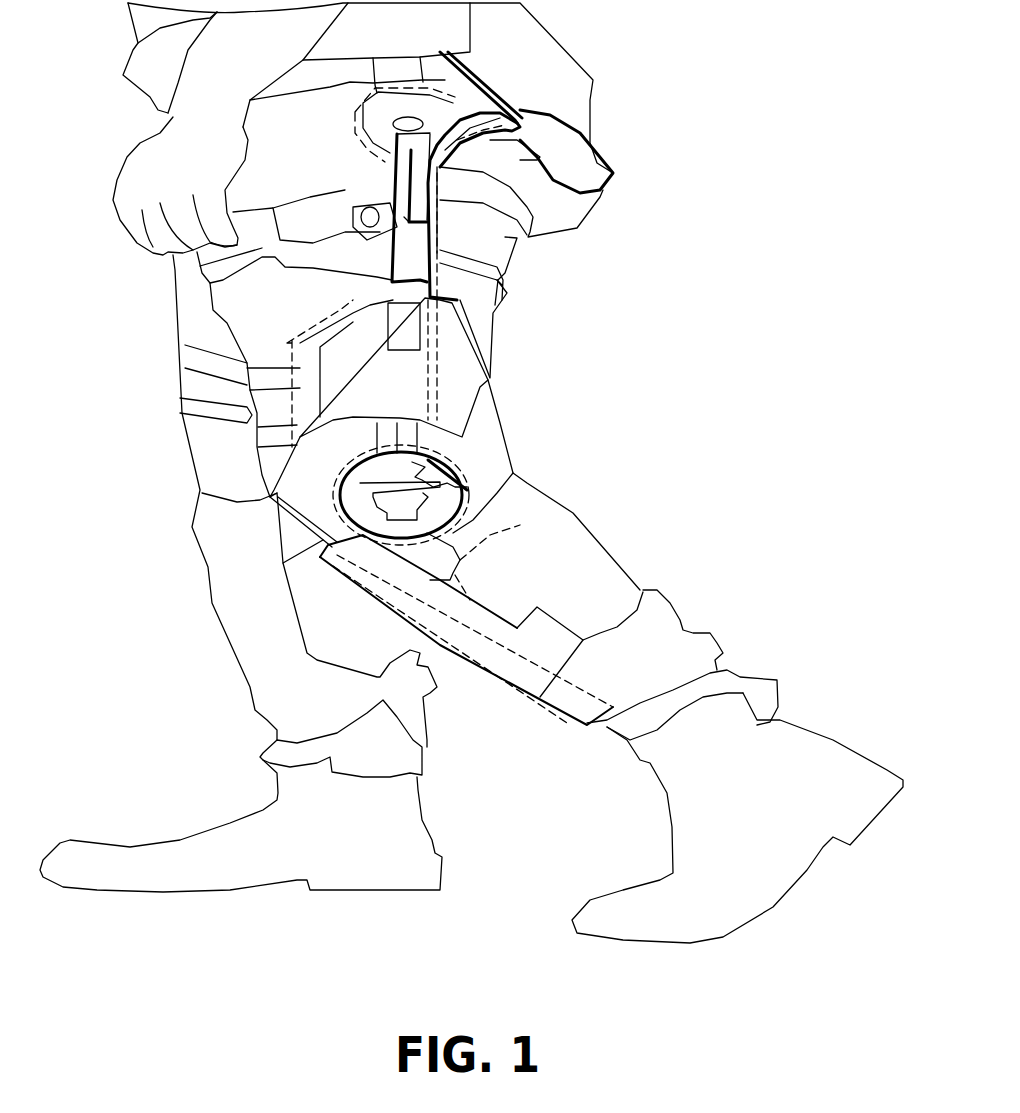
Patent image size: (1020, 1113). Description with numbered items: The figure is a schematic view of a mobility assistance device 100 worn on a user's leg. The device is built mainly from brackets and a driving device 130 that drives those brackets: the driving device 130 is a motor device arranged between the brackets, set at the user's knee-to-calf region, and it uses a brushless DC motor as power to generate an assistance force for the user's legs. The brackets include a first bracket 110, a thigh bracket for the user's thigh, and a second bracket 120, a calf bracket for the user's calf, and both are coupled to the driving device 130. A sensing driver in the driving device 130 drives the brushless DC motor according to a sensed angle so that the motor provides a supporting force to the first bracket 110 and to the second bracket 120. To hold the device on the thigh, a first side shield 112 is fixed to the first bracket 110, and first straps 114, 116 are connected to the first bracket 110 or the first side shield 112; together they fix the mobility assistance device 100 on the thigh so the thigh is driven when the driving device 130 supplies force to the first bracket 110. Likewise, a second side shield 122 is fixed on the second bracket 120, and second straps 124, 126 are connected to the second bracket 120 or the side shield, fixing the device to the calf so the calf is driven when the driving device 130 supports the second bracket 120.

The mobility assistance device 100 is at (822, 195).
The first bracket 110 is at (523, 124).
The first side shield 112 is at (287, 343).
The first strap 114 is at (503, 257).
The first strap 116 is at (460, 403).
The second bracket 120 is at (503, 490).
The second side shield 122 is at (498, 688).
The second strap 124 is at (580, 505).
The second strap 126 is at (660, 633).
The driving device 130 is at (468, 450).